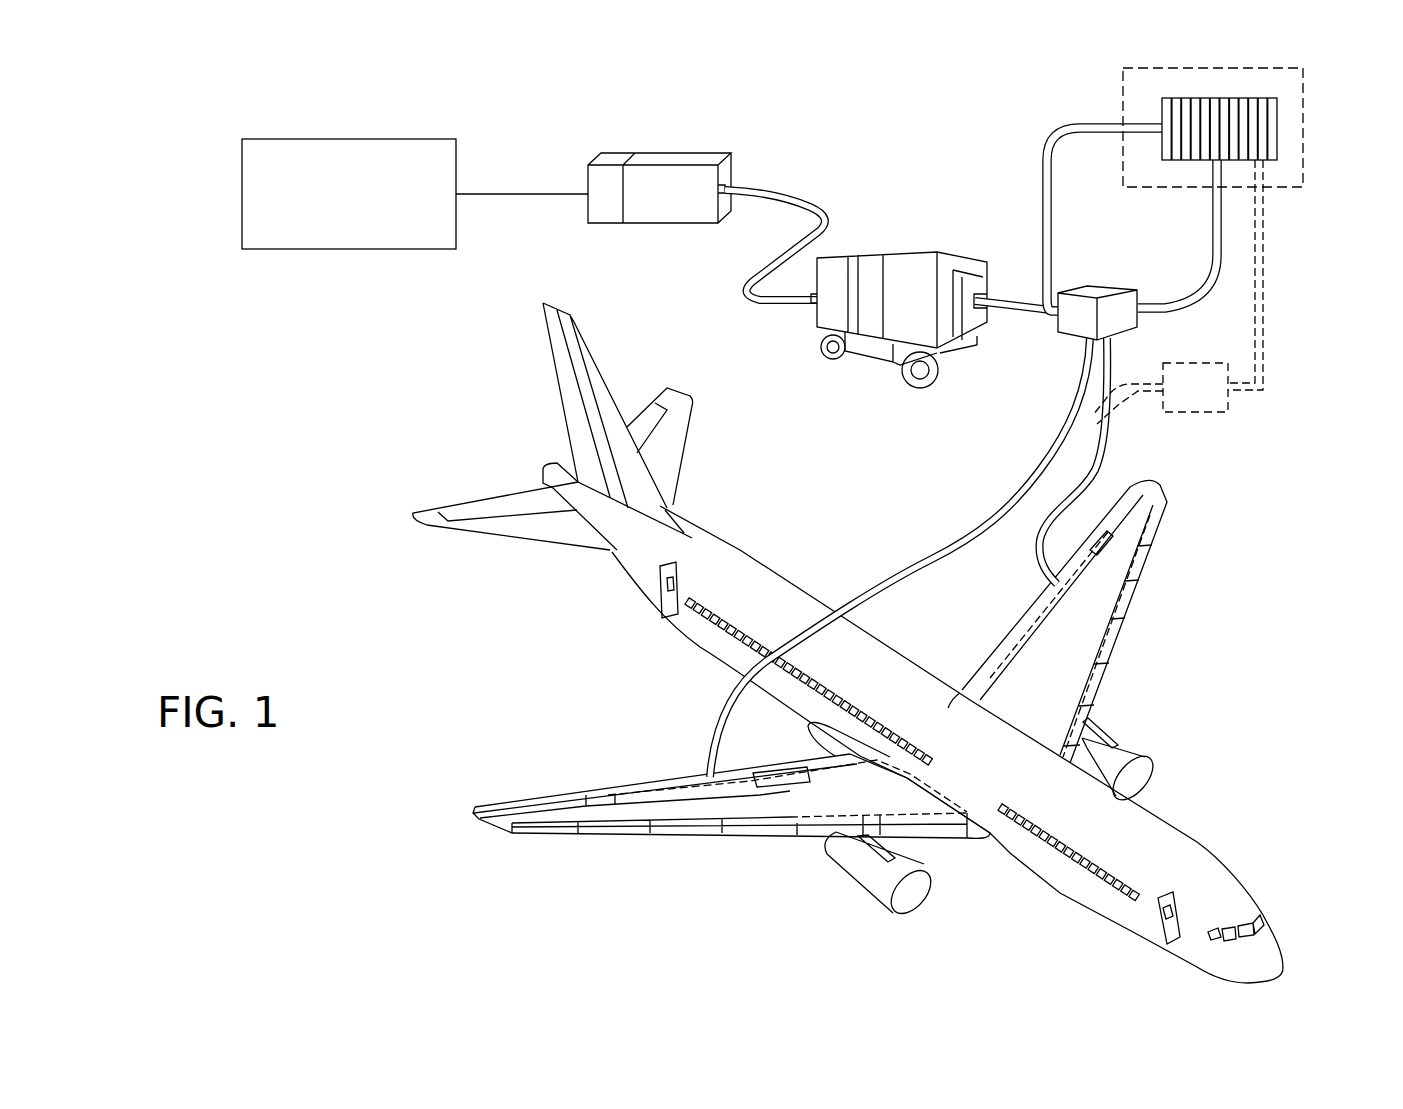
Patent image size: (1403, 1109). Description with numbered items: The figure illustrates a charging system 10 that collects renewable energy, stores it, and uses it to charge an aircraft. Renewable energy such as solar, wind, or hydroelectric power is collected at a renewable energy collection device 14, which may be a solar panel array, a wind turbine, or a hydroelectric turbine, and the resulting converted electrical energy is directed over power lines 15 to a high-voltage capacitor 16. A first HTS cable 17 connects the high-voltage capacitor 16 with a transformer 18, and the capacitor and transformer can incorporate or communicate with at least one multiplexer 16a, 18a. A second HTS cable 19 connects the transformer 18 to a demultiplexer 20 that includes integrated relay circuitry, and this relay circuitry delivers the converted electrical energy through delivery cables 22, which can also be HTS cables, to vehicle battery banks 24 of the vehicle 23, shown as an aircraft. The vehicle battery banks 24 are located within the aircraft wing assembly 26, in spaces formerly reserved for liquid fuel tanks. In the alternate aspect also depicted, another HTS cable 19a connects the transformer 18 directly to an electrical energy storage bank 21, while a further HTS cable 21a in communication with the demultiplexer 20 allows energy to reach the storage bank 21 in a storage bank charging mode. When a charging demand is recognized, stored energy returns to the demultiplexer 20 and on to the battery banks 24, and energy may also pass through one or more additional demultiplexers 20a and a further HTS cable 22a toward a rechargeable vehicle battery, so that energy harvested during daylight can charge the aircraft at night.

The charging system 10 is at (925, 103).
The renewable energy collection device 14 is at (305, 139).
The power lines 15 is at (515, 194).
The high-voltage capacitor 16 is at (680, 153).
The multiplexer 16a is at (727, 168).
The first HTS cable 17 is at (800, 191).
The transformer 18 is at (920, 250).
The multiplexer 18a is at (817, 267).
The second HTS cable 19 is at (1000, 298).
The second HTS cable 19a is at (1048, 154).
The demultiplexer 20 is at (1110, 288).
The demultiplexer 20a is at (1208, 407).
The electrical energy storage bank 21 is at (1162, 108).
The HTS cable 21a is at (1222, 243).
The delivery cables 22 is at (957, 545).
The HTS cable 22a is at (1133, 383).
The vehicle 23 is at (1200, 846).
The vehicle battery banks 24 is at (1097, 587).
The aircraft wing assembly 26 is at (1115, 640).